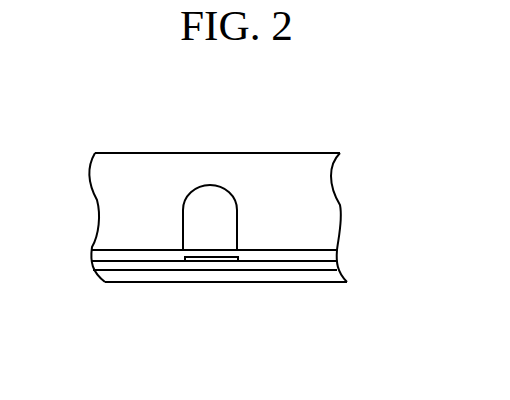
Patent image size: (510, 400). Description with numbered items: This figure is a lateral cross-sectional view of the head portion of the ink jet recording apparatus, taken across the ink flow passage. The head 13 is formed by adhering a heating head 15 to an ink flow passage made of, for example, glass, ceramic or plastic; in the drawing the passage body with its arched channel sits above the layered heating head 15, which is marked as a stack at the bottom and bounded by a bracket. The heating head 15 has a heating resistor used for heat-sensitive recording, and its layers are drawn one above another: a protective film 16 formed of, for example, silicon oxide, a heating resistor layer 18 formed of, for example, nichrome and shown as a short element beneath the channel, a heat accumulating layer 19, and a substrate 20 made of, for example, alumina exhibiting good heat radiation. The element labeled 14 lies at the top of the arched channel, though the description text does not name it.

The substrate 13 is at (123, 153).
The protrusion 14 is at (217, 185).
The multilayer structure 15 is at (362, 248).
The intermediate layer 16 is at (255, 260).
The electrode pad 18 is at (202, 262).
The lower layer 19 is at (290, 270).
The upper layer 20 is at (148, 273).